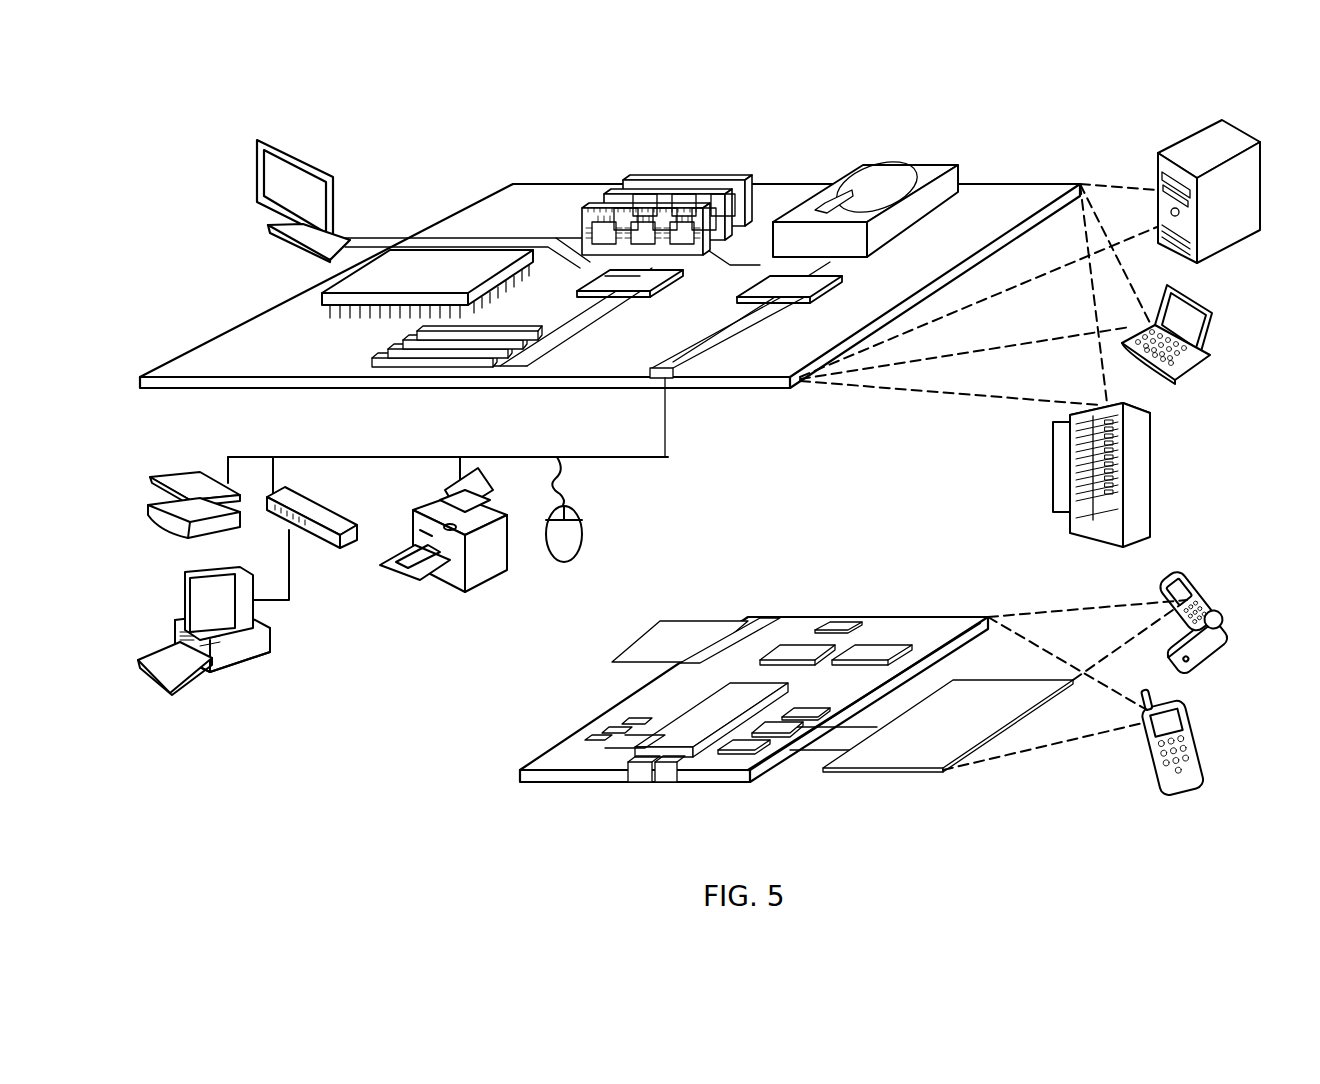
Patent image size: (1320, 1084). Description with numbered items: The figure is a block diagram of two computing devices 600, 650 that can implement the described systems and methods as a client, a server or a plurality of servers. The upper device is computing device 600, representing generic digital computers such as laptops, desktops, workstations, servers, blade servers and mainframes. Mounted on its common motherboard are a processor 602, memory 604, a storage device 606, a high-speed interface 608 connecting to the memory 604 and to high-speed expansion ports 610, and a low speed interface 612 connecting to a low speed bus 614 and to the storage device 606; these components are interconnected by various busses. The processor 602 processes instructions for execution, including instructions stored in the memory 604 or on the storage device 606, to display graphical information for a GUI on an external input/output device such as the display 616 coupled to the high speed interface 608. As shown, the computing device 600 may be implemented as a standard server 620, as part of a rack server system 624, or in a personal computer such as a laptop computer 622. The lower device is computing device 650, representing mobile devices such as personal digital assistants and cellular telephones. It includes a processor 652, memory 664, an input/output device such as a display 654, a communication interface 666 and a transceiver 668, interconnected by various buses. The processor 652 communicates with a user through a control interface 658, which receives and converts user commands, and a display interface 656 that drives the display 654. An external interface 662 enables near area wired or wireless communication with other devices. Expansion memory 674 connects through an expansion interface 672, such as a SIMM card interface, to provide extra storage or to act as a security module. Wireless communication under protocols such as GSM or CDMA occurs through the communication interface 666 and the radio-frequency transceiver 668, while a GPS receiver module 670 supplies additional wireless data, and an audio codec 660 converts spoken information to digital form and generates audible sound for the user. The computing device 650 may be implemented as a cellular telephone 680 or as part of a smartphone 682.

The computing device 600 is at (442, 158).
The processor 602 is at (328, 297).
The memory 604 is at (645, 180).
The storage device 606 is at (862, 172).
The high-speed interface 608 is at (598, 283).
The high-speed expansion ports 610 is at (395, 352).
The low speed interface 612 is at (773, 285).
The low speed bus 614 is at (676, 380).
The display 616 is at (262, 134).
The standard server 620 is at (1158, 173).
The laptop computer 622 is at (1222, 310).
The rack server system 624 is at (1070, 495).
The computing device 650 is at (496, 778).
The processor 652 is at (686, 740).
The display 654 is at (915, 758).
The display interface 656 is at (750, 750).
The control interface 658 is at (780, 733).
The audio codec 660 is at (805, 718).
The external interface 662 is at (650, 783).
The memory 664 is at (608, 737).
The communication interface 666 is at (796, 652).
The transceiver 668 is at (870, 653).
The GPS receiver module 670 is at (846, 624).
The expansion interface 672 is at (718, 636).
The expansion memory 674 is at (650, 640).
The cellular telephone 680 is at (1188, 590).
The smartphone 682 is at (1148, 748).